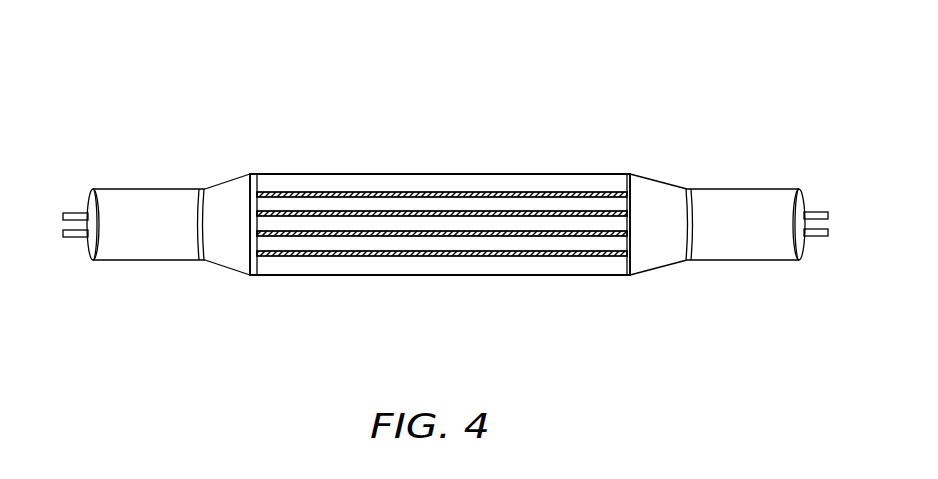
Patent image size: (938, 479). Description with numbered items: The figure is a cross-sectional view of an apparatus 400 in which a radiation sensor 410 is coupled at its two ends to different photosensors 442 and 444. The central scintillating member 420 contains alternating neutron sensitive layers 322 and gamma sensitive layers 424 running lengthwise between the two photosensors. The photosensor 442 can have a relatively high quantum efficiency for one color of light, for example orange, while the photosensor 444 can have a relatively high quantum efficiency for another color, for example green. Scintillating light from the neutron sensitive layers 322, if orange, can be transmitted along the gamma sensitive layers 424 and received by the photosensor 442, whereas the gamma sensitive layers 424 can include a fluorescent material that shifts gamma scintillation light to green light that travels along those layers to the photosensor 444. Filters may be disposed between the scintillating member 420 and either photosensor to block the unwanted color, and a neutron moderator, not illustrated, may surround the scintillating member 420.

The apparatus 400 is at (209, 59).
The radiation sensor 410 is at (488, 158).
The scintillating member 420 is at (347, 278).
The gamma sensitive layers 424 is at (358, 194).
The neutron sensitive layers 322 is at (598, 252).
The photosensor 442 is at (147, 188).
The photosensor 444 is at (743, 188).